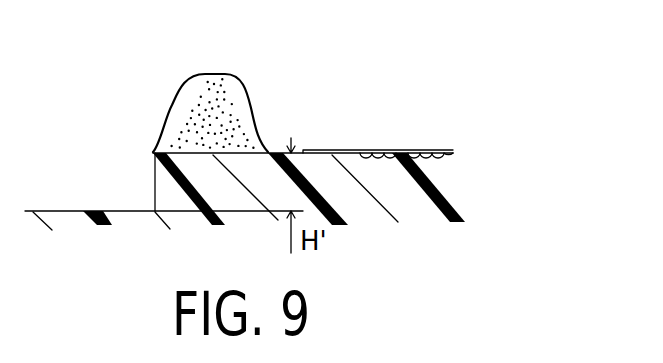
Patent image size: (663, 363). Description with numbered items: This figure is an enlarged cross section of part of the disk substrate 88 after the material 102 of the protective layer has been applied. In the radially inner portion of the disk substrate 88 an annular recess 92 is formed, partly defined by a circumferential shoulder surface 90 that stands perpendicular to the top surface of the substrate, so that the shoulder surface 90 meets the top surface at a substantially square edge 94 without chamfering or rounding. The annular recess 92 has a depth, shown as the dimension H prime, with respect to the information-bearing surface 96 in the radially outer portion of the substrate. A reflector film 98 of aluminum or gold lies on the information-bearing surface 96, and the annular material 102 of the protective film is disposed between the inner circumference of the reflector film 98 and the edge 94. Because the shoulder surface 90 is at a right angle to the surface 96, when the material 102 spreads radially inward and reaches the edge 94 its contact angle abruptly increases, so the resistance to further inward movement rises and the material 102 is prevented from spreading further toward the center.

The disk substrate 88 is at (407, 202).
The circumferential shoulder surface 90 is at (155, 180).
The annular recess 92 is at (66, 211).
The square edge 94 is at (153, 151).
The information-bearing surface 96 is at (280, 153).
The reflector film 98 is at (345, 150).
The material of the protective film 102 is at (215, 82).